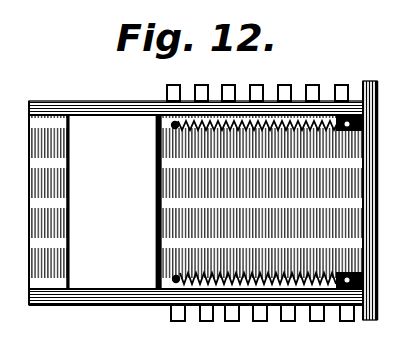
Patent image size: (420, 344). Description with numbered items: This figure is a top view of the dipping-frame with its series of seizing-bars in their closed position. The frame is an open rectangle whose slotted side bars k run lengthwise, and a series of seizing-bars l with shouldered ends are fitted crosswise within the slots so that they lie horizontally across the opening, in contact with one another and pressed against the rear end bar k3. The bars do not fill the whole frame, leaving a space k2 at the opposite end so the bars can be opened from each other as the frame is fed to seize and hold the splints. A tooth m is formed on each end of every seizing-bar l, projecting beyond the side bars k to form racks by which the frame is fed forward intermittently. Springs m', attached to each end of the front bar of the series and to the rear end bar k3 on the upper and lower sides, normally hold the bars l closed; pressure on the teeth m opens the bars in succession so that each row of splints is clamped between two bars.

The side bar k is at (196, 208).
The space k2 is at (112, 202).
The rear end bar k3 is at (356, 200).
The seizing-bar l is at (259, 202).
The tooth m is at (260, 206).
The spring m' is at (267, 202).